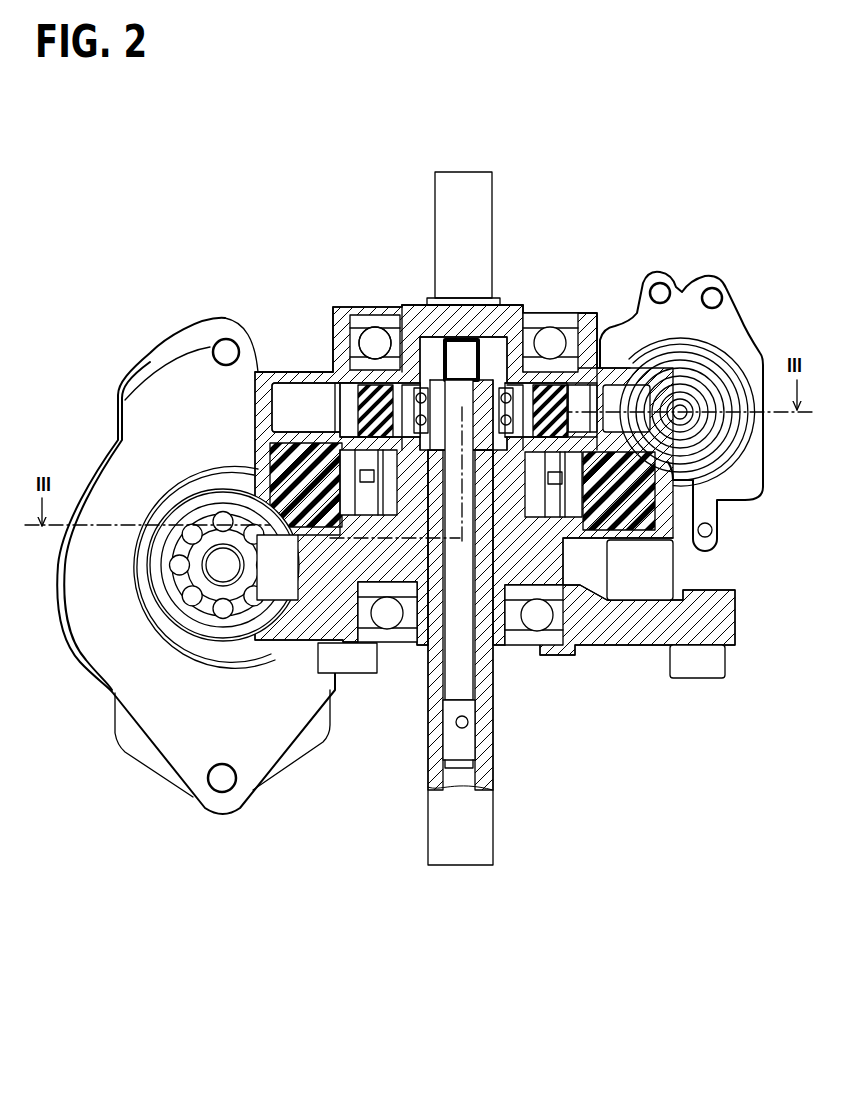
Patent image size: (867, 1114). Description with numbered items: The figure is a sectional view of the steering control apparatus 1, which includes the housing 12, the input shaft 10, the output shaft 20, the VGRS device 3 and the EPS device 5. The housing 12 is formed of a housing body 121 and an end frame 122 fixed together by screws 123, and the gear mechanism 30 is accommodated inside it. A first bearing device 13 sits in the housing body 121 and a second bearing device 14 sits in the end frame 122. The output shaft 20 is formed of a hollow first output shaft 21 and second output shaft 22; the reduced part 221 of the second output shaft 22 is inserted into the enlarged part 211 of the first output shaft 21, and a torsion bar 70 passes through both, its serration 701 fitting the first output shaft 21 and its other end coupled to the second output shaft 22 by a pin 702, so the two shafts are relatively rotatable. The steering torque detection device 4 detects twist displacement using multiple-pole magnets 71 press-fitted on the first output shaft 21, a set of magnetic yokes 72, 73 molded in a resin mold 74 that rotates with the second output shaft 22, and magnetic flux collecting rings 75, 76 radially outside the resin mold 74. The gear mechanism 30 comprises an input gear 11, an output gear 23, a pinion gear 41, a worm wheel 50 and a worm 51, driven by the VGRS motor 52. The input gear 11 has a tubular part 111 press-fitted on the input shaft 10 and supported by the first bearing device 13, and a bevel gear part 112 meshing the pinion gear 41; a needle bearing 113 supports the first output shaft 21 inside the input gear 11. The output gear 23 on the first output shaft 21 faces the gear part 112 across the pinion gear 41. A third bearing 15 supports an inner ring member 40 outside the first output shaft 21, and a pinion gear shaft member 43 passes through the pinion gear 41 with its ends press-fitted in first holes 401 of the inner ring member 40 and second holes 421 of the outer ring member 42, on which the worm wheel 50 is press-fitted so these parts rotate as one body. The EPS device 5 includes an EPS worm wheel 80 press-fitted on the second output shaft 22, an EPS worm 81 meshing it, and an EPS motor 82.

The steering control apparatus 1 is at (300, 876).
The VGRS device 3 is at (752, 332).
The steering torque detection device 4 is at (378, 582).
The EPS device 5 is at (93, 676).
The input shaft 10 is at (460, 190).
The input gear 11 is at (422, 325).
The housing 12 is at (228, 295).
The first bearing device 13 is at (352, 340).
The second bearing device 14 is at (537, 620).
The third bearing 15 is at (550, 340).
The output shaft 20 is at (460, 870).
The first output shaft 21 is at (512, 345).
The second output shaft 22 is at (498, 770).
The output gear 23 is at (330, 437).
The gear mechanism 30 is at (410, 298).
The inner ring member 40 is at (545, 385).
The pinion gear 41 is at (585, 345).
The outer ring member 42 is at (623, 368).
The pinion gear shaft member 43 is at (672, 300).
The worm wheel 50 is at (290, 395).
The worm 51 is at (690, 418).
The VGRS motor 52 is at (760, 358).
The torsion bar 70 is at (458, 673).
The multiple-pole magnets 71 is at (340, 462).
The magnetic yoke 72 is at (355, 490).
The magnetic yoke 73 is at (360, 500).
The resin mold 74 is at (220, 567).
The magnetic flux collecting ring 75 is at (350, 478).
The magnetic flux collecting ring 76 is at (365, 515).
The EPS worm wheel 80 is at (253, 640).
The EPS worm 81 is at (170, 575).
The EPS motor 82 is at (68, 630).
The tubular part 111 is at (385, 372).
The gear part 112 is at (330, 325).
The needle bearing 113 is at (512, 390).
The housing body 121 is at (196, 292).
The end frame 122 is at (623, 637).
The screws 123 is at (693, 665).
The enlarged part 211 is at (647, 470).
The reduced part 221 is at (640, 505).
The first holes 401 is at (370, 342).
The second holes 421 is at (292, 330).
The serration 701 is at (468, 358).
The pin 702 is at (470, 722).